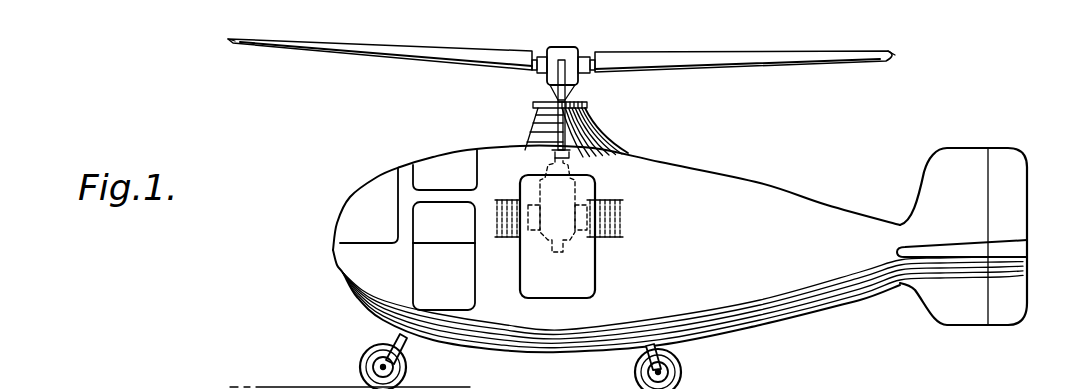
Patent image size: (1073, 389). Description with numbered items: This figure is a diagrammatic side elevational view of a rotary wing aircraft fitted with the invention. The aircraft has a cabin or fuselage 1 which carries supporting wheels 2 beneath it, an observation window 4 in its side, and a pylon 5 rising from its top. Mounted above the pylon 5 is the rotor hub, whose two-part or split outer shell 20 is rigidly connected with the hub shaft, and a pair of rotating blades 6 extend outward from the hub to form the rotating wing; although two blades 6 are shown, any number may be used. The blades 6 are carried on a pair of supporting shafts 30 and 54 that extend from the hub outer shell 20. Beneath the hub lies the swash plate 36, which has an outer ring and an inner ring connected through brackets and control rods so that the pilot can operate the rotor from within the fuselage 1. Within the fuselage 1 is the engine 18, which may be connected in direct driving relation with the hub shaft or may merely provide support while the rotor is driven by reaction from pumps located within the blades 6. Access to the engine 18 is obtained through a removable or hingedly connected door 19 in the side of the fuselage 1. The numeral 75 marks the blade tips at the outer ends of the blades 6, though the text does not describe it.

The fuselage 1 is at (363, 280).
The supporting wheels 2 is at (402, 364).
The observation window 4 is at (362, 203).
The pylon 5 is at (605, 125).
The rotating blades 6 is at (379, 46).
The engine 18 is at (557, 207).
The door 19 is at (577, 283).
The rotor hub outer shell 20 is at (563, 53).
The supporting shaft 30 is at (537, 76).
The swash plate 36 is at (582, 103).
The supporting shaft 54 is at (538, 56).
The blade tips 75 is at (228, 40).